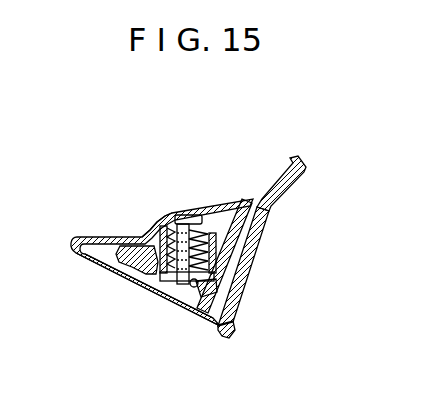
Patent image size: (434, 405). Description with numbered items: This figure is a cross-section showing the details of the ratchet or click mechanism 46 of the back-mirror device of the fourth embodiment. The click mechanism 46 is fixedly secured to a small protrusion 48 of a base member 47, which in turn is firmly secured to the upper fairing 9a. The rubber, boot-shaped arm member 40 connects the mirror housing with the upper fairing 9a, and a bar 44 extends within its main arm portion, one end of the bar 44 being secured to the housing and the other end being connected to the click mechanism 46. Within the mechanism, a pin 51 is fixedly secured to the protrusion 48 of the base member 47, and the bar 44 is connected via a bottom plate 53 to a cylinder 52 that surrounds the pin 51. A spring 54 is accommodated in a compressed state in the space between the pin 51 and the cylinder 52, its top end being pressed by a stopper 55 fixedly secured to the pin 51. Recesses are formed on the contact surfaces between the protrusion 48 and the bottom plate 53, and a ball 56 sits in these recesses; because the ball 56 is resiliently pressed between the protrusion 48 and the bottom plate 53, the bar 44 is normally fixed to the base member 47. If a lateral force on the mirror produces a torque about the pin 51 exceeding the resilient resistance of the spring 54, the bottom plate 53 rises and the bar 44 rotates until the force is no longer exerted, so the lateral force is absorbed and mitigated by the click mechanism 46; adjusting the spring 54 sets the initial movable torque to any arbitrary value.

The upper fairing 9a is at (286, 174).
The arm member 40 is at (243, 197).
The bar 44 is at (107, 236).
The click mechanism 46 is at (152, 303).
The base member 47 is at (214, 251).
The protrusion 48 is at (188, 300).
The pin 51 is at (188, 215).
The cylinder 52 is at (151, 224).
The bottom plate 53 is at (132, 275).
The spring 54 is at (222, 262).
The stopper 55 is at (213, 223).
The ball 56 is at (212, 297).